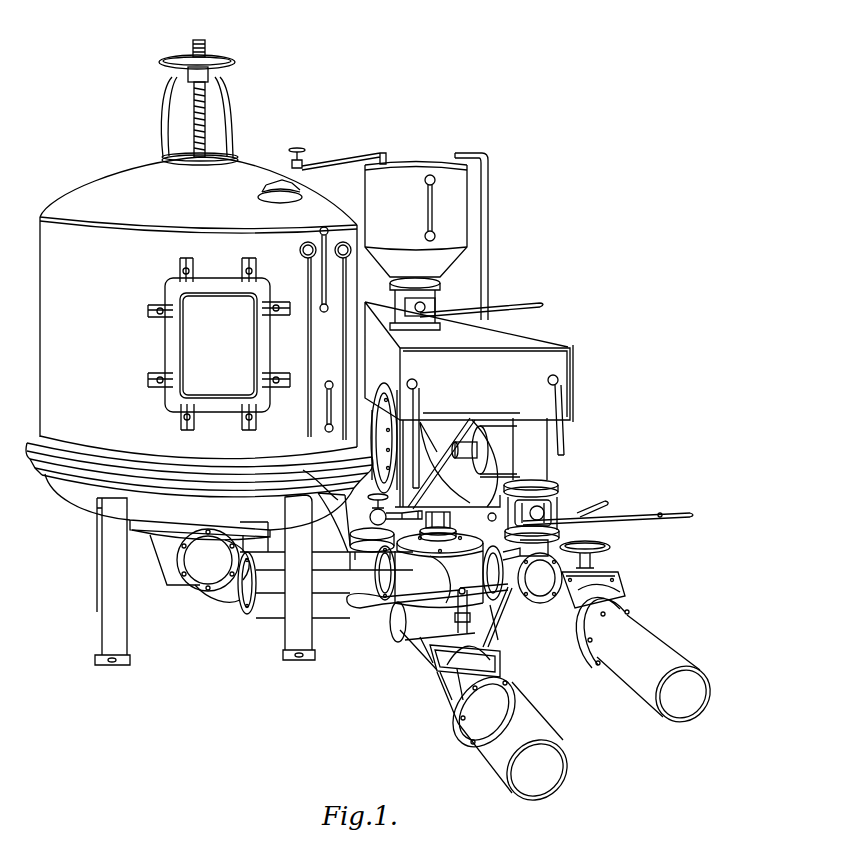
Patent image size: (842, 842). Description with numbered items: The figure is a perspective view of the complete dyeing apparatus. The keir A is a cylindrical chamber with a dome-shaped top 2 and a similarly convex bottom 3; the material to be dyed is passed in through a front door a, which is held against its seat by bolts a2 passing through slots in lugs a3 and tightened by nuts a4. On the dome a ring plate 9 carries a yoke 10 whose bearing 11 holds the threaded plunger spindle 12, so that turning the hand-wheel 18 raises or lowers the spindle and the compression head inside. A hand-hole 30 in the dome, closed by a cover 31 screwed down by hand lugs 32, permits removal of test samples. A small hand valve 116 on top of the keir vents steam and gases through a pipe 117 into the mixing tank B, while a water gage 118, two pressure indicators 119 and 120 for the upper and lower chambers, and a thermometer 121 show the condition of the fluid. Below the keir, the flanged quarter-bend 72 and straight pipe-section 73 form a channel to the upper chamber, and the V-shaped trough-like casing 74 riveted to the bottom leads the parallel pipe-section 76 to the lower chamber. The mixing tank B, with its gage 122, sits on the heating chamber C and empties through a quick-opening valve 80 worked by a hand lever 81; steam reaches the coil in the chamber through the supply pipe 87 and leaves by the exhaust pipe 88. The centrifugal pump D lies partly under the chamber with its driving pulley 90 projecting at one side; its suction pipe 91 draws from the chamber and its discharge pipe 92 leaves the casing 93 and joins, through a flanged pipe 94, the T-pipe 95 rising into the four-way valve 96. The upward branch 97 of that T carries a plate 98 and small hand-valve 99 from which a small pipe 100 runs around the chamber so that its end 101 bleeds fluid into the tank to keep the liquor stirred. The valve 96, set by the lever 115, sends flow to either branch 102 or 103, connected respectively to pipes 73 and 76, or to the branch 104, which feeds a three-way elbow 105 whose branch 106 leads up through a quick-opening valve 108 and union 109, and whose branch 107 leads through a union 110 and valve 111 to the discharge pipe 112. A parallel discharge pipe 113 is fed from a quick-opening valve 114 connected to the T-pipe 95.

The keir A is at (199, 327).
The dome-shaped top 2 is at (102, 201).
The convex bottom 3 is at (199, 507).
The ring plate 9 is at (203, 155).
The yoke 10 is at (232, 121).
The bearing 11 is at (210, 73).
The plunger spindle 12 is at (204, 45).
The hand-wheel 18 is at (232, 58).
The hand-hole 30 is at (260, 199).
The cover 31 is at (260, 192).
The hand lugs 32 is at (262, 186).
The door a is at (217, 345).
The bolts a2 is at (278, 306).
The lugs a3 is at (278, 310).
The nuts a4 is at (272, 302).
The quarter-bend pipe 72 is at (213, 565).
The straight pipe-section 73 is at (325, 585).
The V-shaped trough-like casing 74 is at (160, 554).
The straight pipe-section 76 is at (326, 561).
The quick-opening valve 80 is at (440, 298).
The hand lever 81 is at (505, 308).
The supply pipe 87 is at (420, 405).
The exhaust pipe 88 is at (562, 398).
The driving pulley 90 is at (470, 463).
The suction pipe 91 is at (390, 418).
The discharge pipe 92 is at (326, 511).
The casing 93 is at (380, 405).
The flanged pipe 94 is at (345, 548).
The T-pipe 95 is at (418, 657).
The four-way valve 96 is at (443, 547).
The flanged branch 97 is at (400, 556).
The plate 98 is at (366, 551).
The hand-valve 99 is at (372, 503).
The small pipe 100 is at (488, 218).
The end of pipe 101 is at (458, 152).
The branch 102 is at (446, 594).
The branch 103 is at (378, 560).
The flanged branch 104 is at (427, 608).
The three-way elbow 105 is at (525, 550).
The branch 106 is at (585, 542).
The branch 107 is at (507, 617).
The quick-opening valve 108 is at (563, 492).
The union 109 is at (530, 449).
The union 110 is at (540, 578).
The valve 111 is at (614, 590).
The pipe 112 is at (648, 664).
The pipe 113 is at (518, 747).
The quick-opening valve 114 is at (445, 703).
The lever 115 is at (513, 550).
The hand valve 116 is at (302, 149).
The pipe 117 is at (355, 156).
The water gage 118 is at (326, 280).
The pressure indicator 119 is at (306, 243).
The pressure indicator 120 is at (349, 237).
The thermometer 121 is at (330, 406).
The gage 122 is at (433, 189).
The mixing tank B is at (416, 220).
The heating chamber C is at (469, 404).
The centrifugal pump D is at (457, 460).